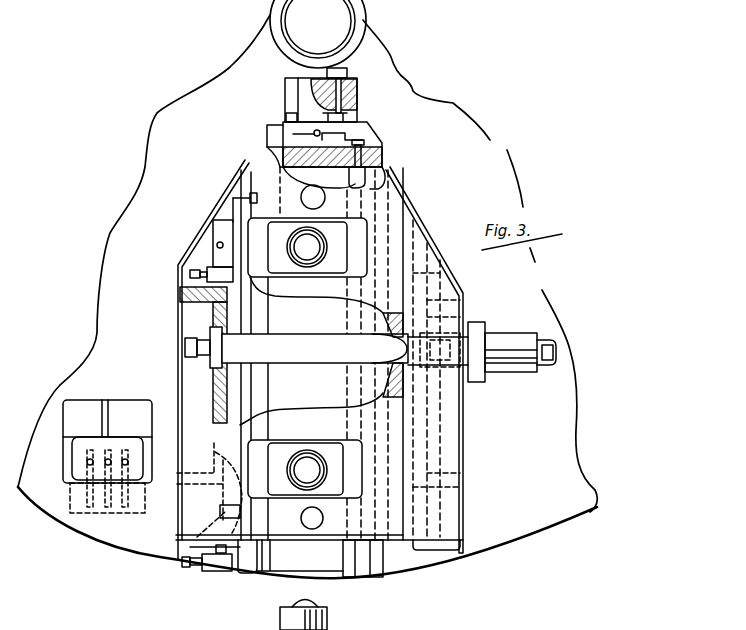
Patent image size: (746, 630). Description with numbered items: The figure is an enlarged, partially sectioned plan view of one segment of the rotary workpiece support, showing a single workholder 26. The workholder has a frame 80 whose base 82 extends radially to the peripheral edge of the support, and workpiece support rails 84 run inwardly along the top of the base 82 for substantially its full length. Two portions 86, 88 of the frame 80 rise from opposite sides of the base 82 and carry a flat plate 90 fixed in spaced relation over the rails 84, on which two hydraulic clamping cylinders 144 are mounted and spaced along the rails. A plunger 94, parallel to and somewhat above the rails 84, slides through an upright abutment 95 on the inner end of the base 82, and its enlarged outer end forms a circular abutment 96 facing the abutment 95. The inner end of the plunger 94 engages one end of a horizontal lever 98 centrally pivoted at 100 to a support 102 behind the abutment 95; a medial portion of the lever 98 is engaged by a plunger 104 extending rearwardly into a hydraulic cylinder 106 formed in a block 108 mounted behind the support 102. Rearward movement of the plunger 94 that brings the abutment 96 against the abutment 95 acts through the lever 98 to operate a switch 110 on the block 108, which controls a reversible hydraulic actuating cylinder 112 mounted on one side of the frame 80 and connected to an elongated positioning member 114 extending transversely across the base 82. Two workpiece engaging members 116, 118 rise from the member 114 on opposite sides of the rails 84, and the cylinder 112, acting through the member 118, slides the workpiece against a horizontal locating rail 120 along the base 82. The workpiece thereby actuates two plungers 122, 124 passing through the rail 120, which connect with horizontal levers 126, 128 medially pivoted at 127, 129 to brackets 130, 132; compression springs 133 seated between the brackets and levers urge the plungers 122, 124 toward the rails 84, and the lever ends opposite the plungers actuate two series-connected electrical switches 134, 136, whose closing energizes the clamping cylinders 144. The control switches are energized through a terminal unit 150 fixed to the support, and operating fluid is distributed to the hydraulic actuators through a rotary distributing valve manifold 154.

The rotary distributing valve manifold 154 is at (354, 34).
The hydraulic cylinder 106 is at (350, 83).
The plunger 104 is at (348, 97).
The block 108 is at (285, 89).
The switch 110 is at (284, 98).
The support 102 is at (373, 128).
The pivot 100 is at (292, 134).
The plunger 94 is at (373, 140).
The upright abutment 95 is at (390, 147).
The circular abutment 96 is at (417, 174).
The horizontal lever 98 is at (321, 343).
The hydraulic clamping cylinders 144 is at (323, 258).
The electrical switch 134 is at (180, 301).
The frame portion 86 is at (215, 403).
The elongated positioning member 114 is at (332, 312).
The workpiece engaging member 118 is at (377, 350).
The workpiece engaging member 116 is at (180, 377).
The reversible hydraulic actuating cylinder 112 is at (523, 337).
The frame portion 88 is at (420, 422).
The workholder 26 is at (443, 433).
The frame 80 is at (474, 482).
The flat plate 90 is at (398, 522).
The plunger 122 is at (248, 186).
The bracket 130 is at (212, 221).
The horizontal lever 126 is at (206, 242).
The pivot 127 is at (216, 245).
The compression spring 133 is at (190, 260).
The plunger 124 is at (215, 453).
The pivot 129 is at (210, 518).
The horizontal lever 128 is at (197, 548).
The electrical switch 136 is at (200, 570).
The bracket 132 is at (225, 571).
The horizontal locating rail 120 is at (250, 570).
The workpiece support rails 84 is at (350, 560).
The base 82 is at (293, 572).
The terminal unit 150 is at (78, 457).